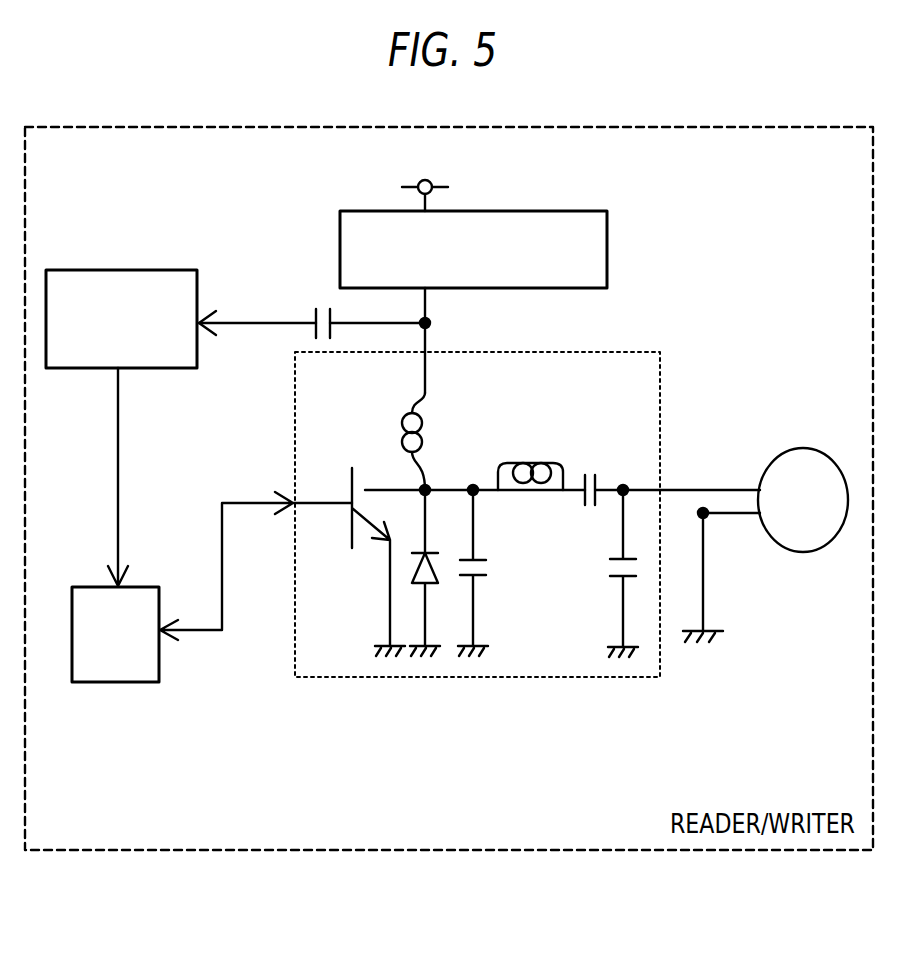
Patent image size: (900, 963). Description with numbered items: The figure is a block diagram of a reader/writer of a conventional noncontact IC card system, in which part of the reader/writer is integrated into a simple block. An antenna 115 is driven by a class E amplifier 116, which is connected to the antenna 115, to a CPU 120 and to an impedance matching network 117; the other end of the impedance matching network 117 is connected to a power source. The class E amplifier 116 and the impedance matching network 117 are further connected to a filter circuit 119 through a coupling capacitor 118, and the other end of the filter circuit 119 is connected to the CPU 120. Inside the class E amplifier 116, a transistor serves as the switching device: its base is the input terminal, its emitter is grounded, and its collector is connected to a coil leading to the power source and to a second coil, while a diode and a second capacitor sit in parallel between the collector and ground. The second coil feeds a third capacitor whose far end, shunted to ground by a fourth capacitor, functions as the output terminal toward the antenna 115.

The antenna 115 is at (804, 448).
The class E amplifier 116 is at (600, 677).
The impedance matching network 117 is at (608, 252).
The coupling capacitor 118 is at (323, 309).
The filter circuit 119 is at (190, 270).
The CPU 120 is at (107, 682).